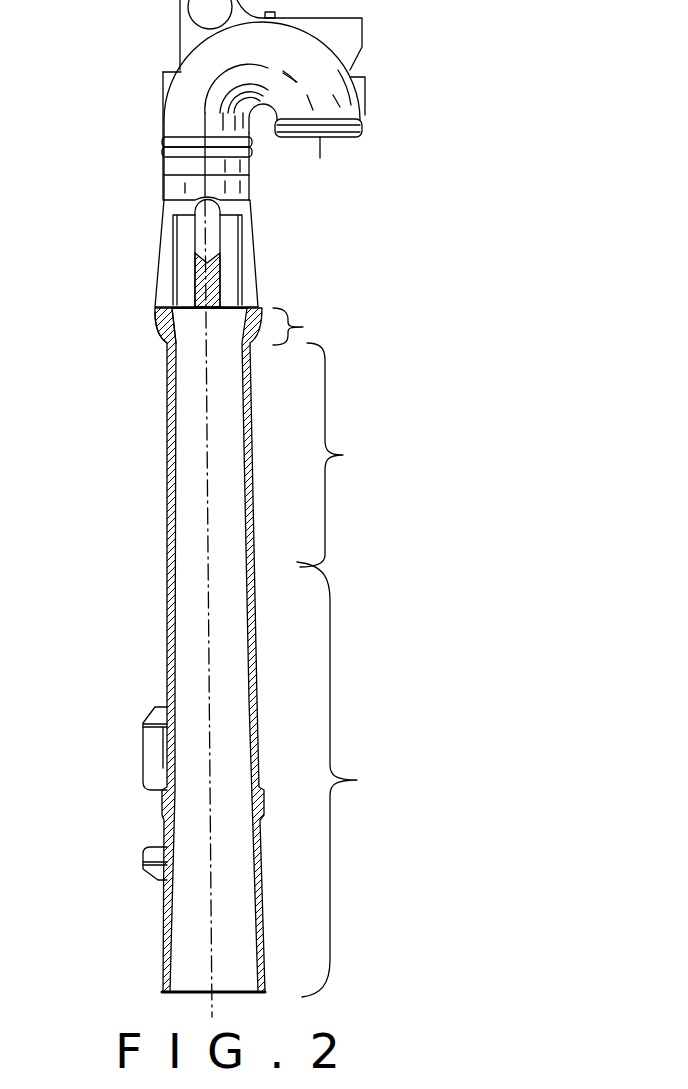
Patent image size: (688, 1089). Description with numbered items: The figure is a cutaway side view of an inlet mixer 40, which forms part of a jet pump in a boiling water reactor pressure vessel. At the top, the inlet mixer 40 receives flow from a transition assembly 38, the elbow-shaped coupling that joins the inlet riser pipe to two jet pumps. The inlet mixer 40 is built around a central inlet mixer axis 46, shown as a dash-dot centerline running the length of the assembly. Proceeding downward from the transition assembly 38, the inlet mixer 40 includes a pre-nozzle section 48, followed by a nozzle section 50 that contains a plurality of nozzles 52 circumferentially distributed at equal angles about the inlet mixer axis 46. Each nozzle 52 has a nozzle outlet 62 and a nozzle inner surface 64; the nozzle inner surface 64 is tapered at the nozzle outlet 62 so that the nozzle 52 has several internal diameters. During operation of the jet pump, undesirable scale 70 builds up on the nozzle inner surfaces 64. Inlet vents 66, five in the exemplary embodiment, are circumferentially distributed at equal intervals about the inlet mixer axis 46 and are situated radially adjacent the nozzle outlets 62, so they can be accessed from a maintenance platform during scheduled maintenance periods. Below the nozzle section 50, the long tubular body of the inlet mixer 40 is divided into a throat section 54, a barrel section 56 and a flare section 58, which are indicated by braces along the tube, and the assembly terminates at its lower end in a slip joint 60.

The transition assembly 38 is at (352, 72).
The inlet mixer 40 is at (143, 497).
The inlet mixer axis 46 is at (205, 673).
The pre-nozzle section 48 is at (248, 193).
The nozzle section 50 is at (262, 253).
The nozzle 52 is at (183, 243).
The throat section 54 is at (309, 326).
The barrel section 56 is at (339, 455).
The flare section 58 is at (348, 779).
The slip joint 60 is at (267, 972).
The nozzle outlet 62 is at (158, 300).
The nozzle inner surface 64 is at (240, 290).
The inlet vent 66 is at (247, 305).
The scale 70 is at (240, 247).